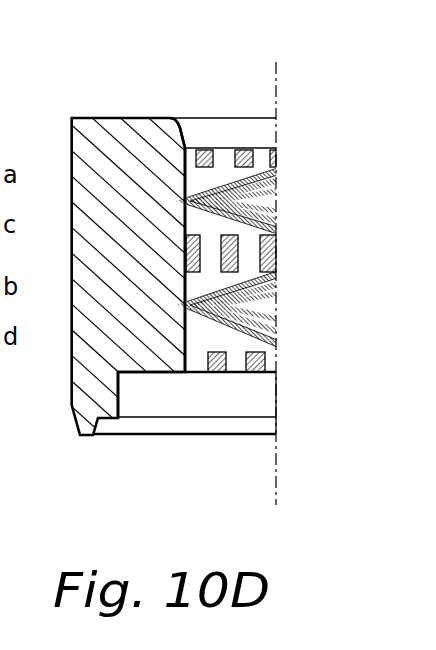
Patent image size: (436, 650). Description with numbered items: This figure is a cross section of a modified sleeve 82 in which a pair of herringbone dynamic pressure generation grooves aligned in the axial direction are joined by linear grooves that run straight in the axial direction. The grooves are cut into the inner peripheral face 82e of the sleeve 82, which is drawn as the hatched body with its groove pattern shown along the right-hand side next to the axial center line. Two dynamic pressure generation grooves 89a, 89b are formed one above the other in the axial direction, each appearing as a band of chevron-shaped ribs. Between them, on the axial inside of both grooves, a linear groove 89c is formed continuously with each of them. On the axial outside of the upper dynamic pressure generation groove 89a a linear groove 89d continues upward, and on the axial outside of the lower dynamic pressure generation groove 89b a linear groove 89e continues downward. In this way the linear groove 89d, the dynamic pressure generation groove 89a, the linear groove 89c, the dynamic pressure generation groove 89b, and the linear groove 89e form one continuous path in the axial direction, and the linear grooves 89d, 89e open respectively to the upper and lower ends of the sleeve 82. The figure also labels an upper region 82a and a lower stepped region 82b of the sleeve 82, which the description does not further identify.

The sleeve 82 is at (78, 408).
The upper portion of body 82a is at (173, 110).
The step surface 82b is at (150, 372).
The inner peripheral face 82e is at (193, 372).
The dynamic pressure generation groove 89a is at (282, 190).
The dynamic pressure generation groove 89b is at (282, 300).
The linear groove 89c is at (282, 237).
The linear groove 89d is at (282, 153).
The linear groove 89e is at (282, 357).